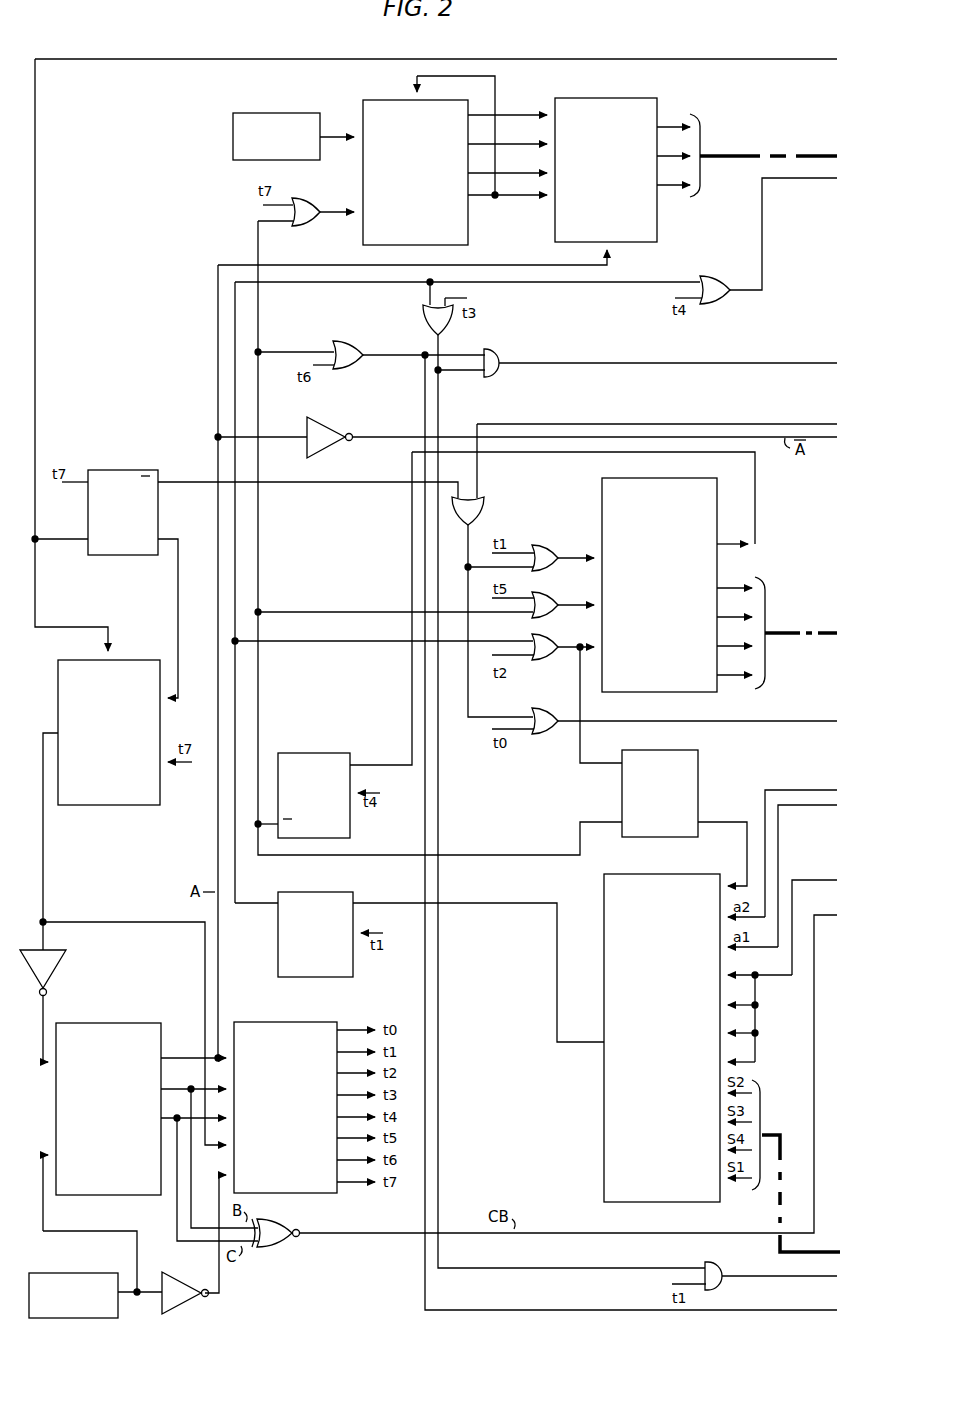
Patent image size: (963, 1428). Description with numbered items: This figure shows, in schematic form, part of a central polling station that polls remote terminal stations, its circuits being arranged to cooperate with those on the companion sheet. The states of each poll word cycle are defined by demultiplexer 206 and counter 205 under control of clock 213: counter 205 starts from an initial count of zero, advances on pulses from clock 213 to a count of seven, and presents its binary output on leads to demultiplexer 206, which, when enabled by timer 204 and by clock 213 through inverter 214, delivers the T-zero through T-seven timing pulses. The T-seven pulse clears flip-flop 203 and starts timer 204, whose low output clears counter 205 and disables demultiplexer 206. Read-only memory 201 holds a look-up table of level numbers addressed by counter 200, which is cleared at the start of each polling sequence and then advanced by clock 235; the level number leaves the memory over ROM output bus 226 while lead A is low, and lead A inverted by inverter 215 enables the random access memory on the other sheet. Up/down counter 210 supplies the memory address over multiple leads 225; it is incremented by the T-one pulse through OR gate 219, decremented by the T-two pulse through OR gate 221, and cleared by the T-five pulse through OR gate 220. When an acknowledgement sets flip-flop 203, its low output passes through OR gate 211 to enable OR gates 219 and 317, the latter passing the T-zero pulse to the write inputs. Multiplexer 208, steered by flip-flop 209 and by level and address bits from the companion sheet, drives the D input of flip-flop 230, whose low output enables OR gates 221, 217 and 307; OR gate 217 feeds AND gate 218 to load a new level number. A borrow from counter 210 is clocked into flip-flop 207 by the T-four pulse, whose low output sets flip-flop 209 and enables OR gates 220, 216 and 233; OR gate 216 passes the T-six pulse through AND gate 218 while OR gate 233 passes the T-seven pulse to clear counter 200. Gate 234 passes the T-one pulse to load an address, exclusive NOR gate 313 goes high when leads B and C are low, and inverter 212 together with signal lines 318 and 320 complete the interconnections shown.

The counter 200 is at (400, 104).
The read-only memory 201 is at (601, 100).
The flip-flop 203 is at (102, 472).
The timer 204 is at (107, 810).
The counter 205 is at (101, 1023).
The demultiplexer 206 is at (279, 1023).
The flip-flop 207 is at (289, 755).
The multiplexer 208 is at (649, 877).
The flip-flop 209 is at (649, 752).
The up/down counter 210 is at (659, 573).
The OR gate 211 is at (482, 510).
The inverter 212 is at (58, 968).
The clock 213 is at (47, 1274).
The inverter 214 is at (186, 1308).
The inverter 215 is at (328, 422).
The OR gate 216 is at (352, 368).
The OR gate 217 is at (427, 322).
The AND gate 218 is at (496, 356).
The OR gate 219 is at (540, 549).
The OR gate 220 is at (542, 596).
The OR gate 221 is at (545, 638).
The multiple leads 225 is at (781, 632).
The ROM output bus 226 is at (795, 155).
The flip-flop 230 is at (289, 894).
The OR gate 233 is at (300, 202).
The gate 234 is at (722, 1270).
The clock 235 is at (247, 118).
The OR gate 307 is at (729, 300).
The exclusive NOR gate 313 is at (282, 1245).
The OR gate 317 is at (547, 712).
The signal line 318 is at (780, 56).
The signal line 320 is at (737, 423).